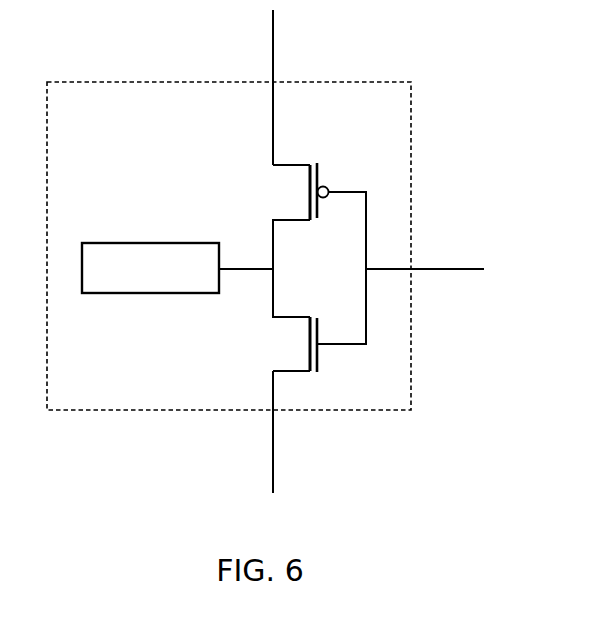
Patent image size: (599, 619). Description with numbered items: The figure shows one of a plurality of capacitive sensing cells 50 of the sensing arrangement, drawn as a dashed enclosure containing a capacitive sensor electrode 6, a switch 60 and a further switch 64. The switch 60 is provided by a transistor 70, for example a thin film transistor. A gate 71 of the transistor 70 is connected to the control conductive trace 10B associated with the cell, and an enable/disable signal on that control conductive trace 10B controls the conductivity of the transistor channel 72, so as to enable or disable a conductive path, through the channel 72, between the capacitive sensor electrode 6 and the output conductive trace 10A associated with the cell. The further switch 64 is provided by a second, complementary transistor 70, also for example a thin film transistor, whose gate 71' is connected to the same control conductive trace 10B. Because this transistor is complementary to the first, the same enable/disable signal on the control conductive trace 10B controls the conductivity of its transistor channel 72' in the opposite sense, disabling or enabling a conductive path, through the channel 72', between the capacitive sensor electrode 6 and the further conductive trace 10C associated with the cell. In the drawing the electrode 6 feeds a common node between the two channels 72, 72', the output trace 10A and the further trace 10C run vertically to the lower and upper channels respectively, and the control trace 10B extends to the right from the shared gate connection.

The capacitive sensor electrode 6 is at (177, 268).
The output conductive trace 10A is at (273, 483).
The control conductive trace 10B is at (467, 272).
The further conductive trace 10C is at (273, 30).
The capacitive sensing cell 50 is at (388, 82).
The switch 60 is at (263, 287).
The further switch 64 is at (316, 163).
The transistor 70 is at (263, 253).
The gate 71 is at (343, 355).
The gate 71' is at (335, 216).
The transistor channel 72 is at (274, 344).
The transistor channel 72' is at (270, 190).